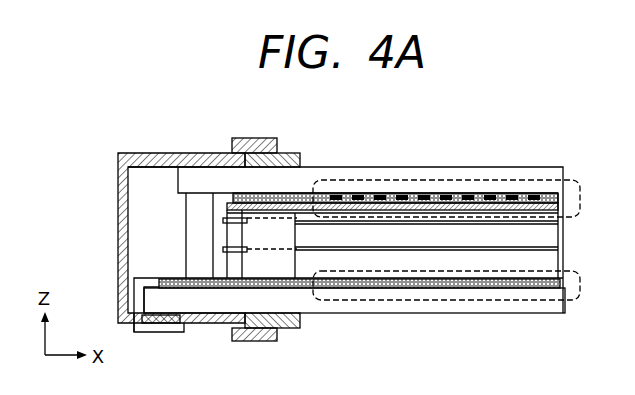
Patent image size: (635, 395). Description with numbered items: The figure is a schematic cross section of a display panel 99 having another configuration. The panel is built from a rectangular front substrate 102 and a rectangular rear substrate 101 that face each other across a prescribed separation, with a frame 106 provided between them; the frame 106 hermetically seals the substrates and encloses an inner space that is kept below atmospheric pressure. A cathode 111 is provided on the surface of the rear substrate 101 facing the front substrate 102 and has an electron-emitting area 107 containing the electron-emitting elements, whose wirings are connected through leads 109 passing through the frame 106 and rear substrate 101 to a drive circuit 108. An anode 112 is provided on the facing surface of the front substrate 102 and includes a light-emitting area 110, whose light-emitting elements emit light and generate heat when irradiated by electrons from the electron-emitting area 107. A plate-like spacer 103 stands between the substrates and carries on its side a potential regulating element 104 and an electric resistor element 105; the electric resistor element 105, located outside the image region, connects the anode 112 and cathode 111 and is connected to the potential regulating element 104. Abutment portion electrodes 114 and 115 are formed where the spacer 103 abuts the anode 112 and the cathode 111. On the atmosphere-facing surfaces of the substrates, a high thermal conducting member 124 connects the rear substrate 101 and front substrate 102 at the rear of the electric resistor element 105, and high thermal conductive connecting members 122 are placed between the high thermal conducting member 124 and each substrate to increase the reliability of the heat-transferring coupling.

The display panel 99 is at (501, 108).
The rear substrate 101 is at (210, 305).
The front substrate 102 is at (197, 178).
The spacer 103 is at (470, 193).
The potential regulating element 104 is at (378, 247).
The electric resistor element 105 is at (285, 235).
The frame 106 is at (193, 230).
The electron-emitting area 107 is at (453, 300).
The drive circuit 108 is at (173, 332).
The leads 109 is at (142, 332).
The light-emitting area 110 is at (425, 180).
The cathode 111 is at (198, 275).
The anode 112 is at (250, 140).
The abutment portion electrode 114 is at (323, 273).
The abutment portion electrode 115 is at (513, 197).
The high thermal conductive connecting member 122 is at (288, 152).
The high thermal conducting member 124 is at (133, 153).